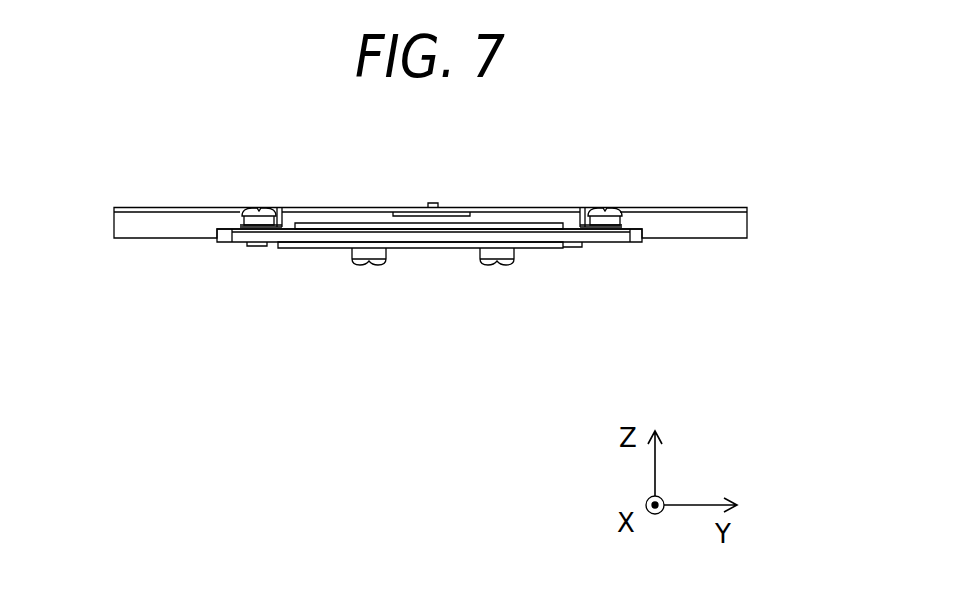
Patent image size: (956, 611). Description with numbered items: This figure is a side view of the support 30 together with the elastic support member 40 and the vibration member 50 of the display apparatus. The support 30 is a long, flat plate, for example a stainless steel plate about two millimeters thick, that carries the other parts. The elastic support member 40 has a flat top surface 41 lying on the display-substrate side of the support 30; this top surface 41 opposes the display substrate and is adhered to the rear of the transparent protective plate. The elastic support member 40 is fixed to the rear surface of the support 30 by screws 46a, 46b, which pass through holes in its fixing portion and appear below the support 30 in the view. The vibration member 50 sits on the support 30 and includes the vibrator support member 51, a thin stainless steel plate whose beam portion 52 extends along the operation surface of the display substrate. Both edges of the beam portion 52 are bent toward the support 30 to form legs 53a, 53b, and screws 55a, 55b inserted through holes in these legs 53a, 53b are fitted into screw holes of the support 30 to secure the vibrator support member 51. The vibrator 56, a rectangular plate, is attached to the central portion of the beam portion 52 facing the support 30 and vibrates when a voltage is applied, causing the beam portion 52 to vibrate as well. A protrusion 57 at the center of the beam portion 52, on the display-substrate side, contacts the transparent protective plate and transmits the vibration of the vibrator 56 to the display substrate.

The support 30 is at (620, 243).
The elastic support member 40 is at (712, 238).
The top surface 41 is at (688, 209).
The screw 46a is at (355, 263).
The screw 46b is at (500, 264).
The vibration member 50 is at (471, 216).
The vibrator support member 51 is at (297, 214).
The beam portion 52 is at (345, 215).
The leg 53a is at (288, 210).
The leg 53b is at (572, 212).
The screw 55a is at (245, 208).
The screw 55b is at (608, 209).
The vibrator 56 is at (415, 217).
The protrusion 57 is at (433, 203).